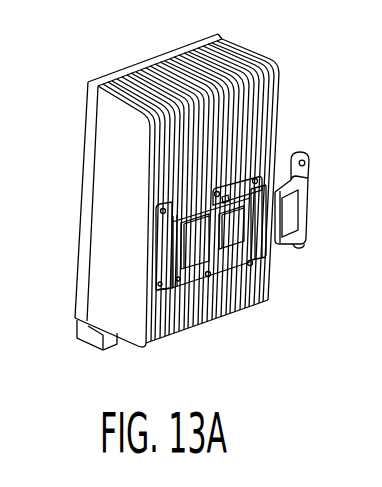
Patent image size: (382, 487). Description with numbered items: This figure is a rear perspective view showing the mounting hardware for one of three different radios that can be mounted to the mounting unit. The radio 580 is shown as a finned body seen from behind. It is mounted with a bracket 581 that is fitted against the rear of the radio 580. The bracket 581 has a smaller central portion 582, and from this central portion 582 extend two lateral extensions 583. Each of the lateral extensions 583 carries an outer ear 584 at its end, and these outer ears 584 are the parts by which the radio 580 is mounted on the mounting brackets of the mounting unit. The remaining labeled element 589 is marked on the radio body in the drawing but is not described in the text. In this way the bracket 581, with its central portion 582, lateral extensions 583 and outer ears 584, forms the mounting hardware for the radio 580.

The radio 580 is at (66, 229).
The bracket 581 is at (184, 192).
The central portion 582 is at (246, 306).
The lateral extensions 583 is at (284, 242).
The outer ears 584 is at (302, 167).
The base plate 589 is at (160, 256).